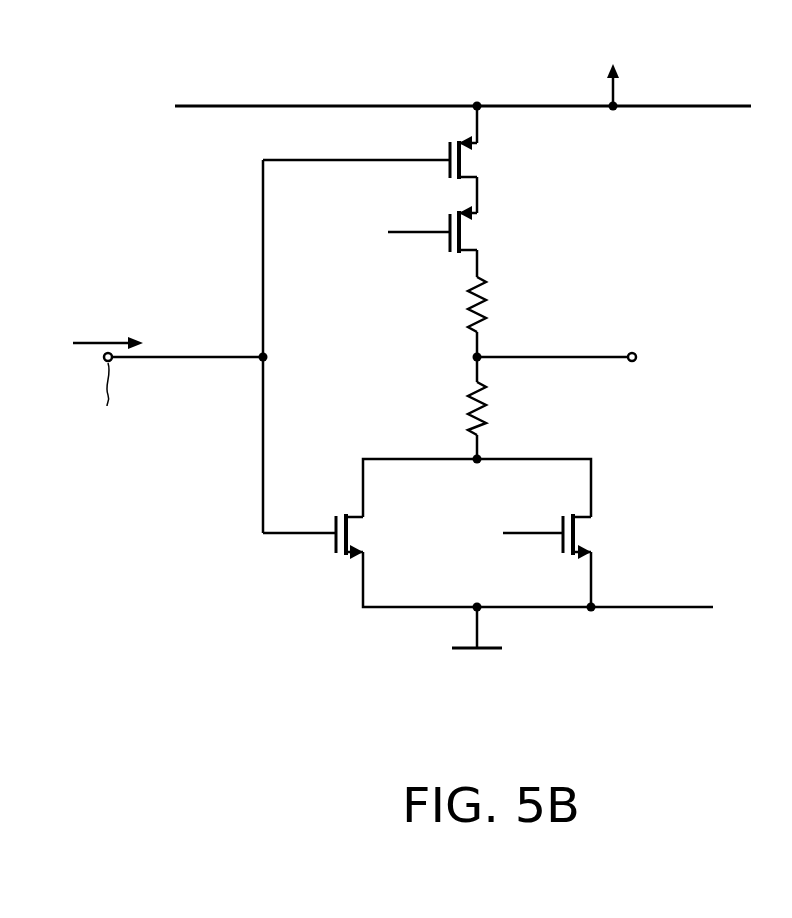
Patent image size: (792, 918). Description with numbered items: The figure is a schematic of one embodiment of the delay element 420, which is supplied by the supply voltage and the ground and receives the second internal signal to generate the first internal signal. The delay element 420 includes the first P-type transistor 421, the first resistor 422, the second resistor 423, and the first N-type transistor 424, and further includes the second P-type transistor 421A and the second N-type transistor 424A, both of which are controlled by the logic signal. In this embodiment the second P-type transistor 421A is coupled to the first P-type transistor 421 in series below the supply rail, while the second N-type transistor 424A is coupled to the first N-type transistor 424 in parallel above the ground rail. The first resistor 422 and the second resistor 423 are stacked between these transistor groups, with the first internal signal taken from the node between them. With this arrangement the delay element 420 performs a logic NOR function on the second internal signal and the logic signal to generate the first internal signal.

The delay element 420 is at (419, 371).
The first P-type transistor 421 is at (478, 161).
The second P-type transistor 421A is at (478, 233).
The first resistor 422 is at (490, 296).
The second resistor 423 is at (490, 400).
The first N-type transistor 424 is at (360, 533).
The second N-type transistor 424A is at (587, 533).